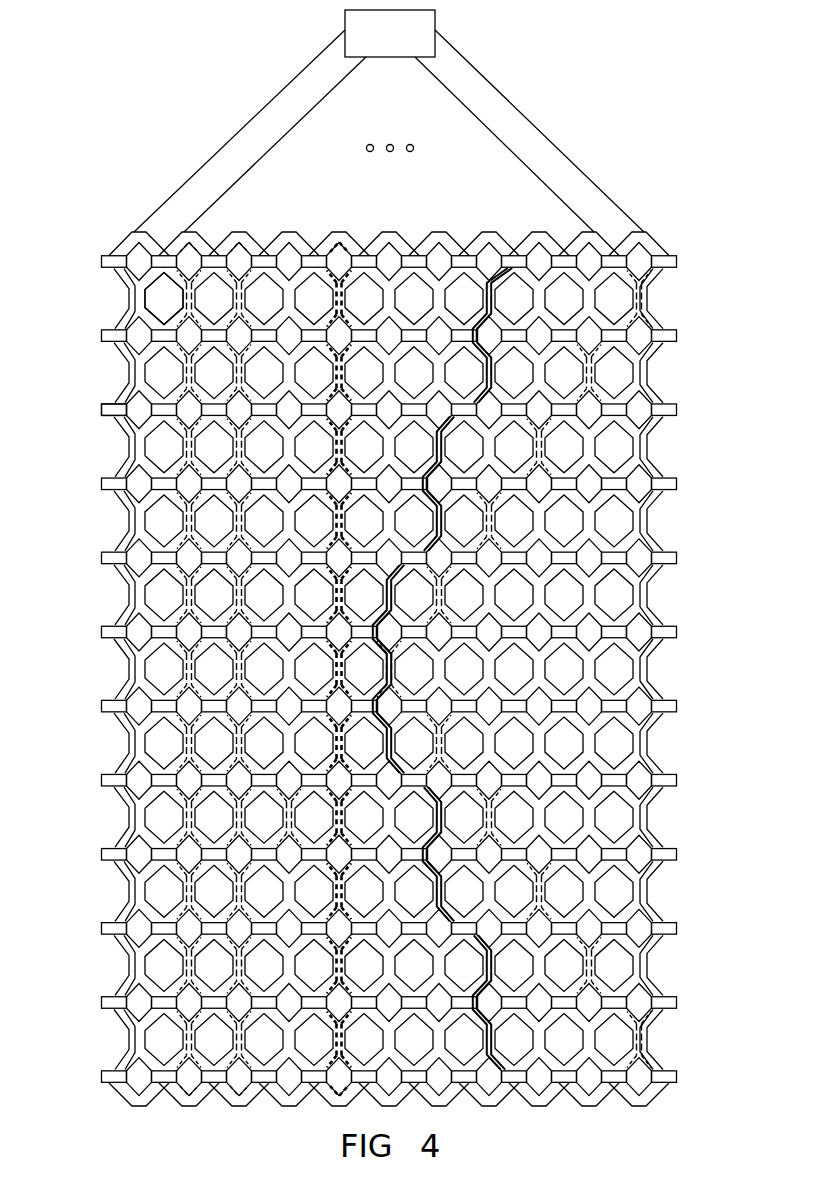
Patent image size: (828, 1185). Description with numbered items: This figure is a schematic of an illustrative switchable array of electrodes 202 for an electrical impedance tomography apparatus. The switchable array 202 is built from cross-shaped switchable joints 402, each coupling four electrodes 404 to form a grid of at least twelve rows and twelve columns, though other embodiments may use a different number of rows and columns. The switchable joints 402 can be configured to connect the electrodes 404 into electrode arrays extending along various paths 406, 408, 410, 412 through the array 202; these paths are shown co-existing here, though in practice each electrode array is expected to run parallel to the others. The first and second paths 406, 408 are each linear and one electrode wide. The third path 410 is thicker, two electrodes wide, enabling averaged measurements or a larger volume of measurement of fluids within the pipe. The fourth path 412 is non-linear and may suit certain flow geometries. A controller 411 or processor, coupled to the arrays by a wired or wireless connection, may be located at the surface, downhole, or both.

The switchable array of electrodes 202 is at (668, 200).
The cross-shaped switchable joint 402 is at (138, 300).
The electrode 404 is at (100, 410).
The first path 406 is at (183, 603).
The second path 408 is at (237, 678).
The third path 410 is at (340, 1052).
The controller 411 is at (375, 47).
The fourth path 412 is at (493, 1050).